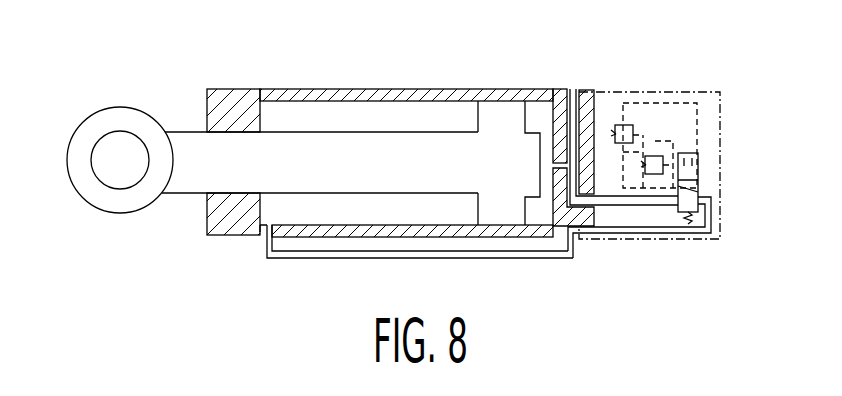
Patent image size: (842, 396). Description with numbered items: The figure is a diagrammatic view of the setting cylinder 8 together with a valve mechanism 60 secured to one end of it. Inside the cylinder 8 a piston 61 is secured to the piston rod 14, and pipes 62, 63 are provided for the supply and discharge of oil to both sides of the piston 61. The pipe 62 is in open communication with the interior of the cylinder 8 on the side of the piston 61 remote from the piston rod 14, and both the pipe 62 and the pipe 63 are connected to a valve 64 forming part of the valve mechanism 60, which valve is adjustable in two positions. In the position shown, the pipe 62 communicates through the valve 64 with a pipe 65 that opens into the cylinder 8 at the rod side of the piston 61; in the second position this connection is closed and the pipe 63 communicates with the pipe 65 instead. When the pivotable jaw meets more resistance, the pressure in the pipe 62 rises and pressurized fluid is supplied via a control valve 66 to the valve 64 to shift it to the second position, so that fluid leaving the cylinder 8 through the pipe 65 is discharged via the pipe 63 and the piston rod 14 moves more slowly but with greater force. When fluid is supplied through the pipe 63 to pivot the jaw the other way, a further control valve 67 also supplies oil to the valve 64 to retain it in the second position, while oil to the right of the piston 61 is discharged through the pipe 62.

The setting cylinder 8 is at (347, 96).
The piston rod 14 is at (183, 194).
The piston 61 is at (495, 117).
The pipe 62 is at (567, 91).
The pipe 63 is at (581, 90).
The valve mechanism 60 is at (689, 81).
The control valve 66 is at (620, 124).
The further control valve 67 is at (660, 158).
The valve 64 is at (700, 186).
The pipe 65 is at (272, 257).